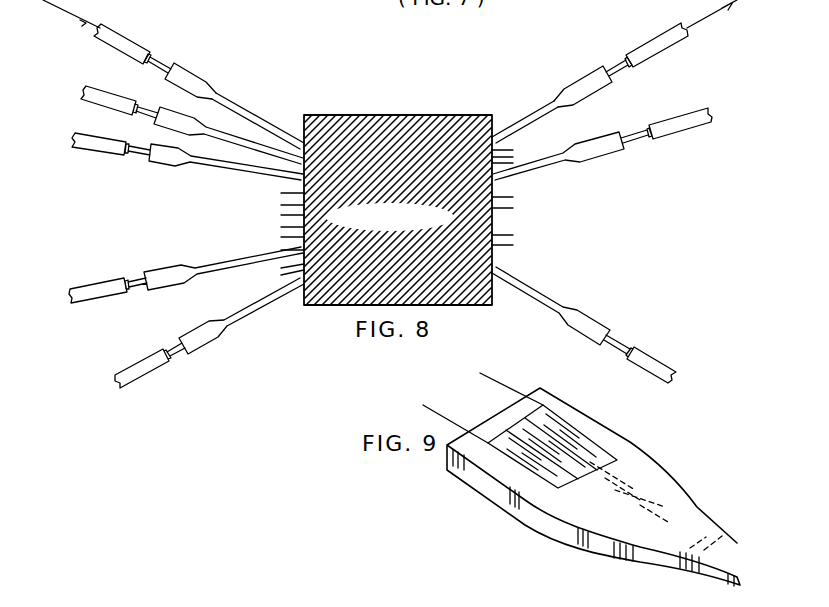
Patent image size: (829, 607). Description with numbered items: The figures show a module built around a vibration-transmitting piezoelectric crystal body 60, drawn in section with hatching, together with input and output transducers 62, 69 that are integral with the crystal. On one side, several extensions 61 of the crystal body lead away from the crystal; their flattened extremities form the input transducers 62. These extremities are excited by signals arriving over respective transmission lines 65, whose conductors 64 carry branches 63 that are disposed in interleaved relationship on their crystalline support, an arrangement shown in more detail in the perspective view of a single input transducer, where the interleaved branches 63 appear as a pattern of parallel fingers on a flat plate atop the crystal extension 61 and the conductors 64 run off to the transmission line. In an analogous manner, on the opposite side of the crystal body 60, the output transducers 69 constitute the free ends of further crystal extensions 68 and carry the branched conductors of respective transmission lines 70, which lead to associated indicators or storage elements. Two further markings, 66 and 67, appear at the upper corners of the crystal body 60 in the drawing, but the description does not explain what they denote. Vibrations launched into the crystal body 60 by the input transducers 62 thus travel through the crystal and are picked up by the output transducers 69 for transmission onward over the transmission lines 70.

In FIG. 8, the piezoelectric crystal body 60 is at (386, 120).
In FIG. 8, the extensions of the crystal body 61 is at (291, 288).
In FIG. 9, the extensions of the crystal body 61 is at (727, 548).
In FIG. 8, the input transducers 62 is at (187, 77).
In FIG. 9, the input transducers 62 is at (650, 477).
In FIG. 9, the branches 63 is at (550, 440).
In FIG. 9, the conductors 64 is at (463, 422).
In FIG. 8, the transmission lines 65 is at (127, 43).
In FIG. 8, the crystal corner electrode 66 is at (304, 116).
In FIG. 8, the crystal corner electrode 67 is at (494, 117).
In FIG. 8, the crystal extensions 68 is at (523, 125).
In FIG. 8, the output transducers 69 is at (578, 86).
In FIG. 8, the transmission lines 70 is at (648, 50).